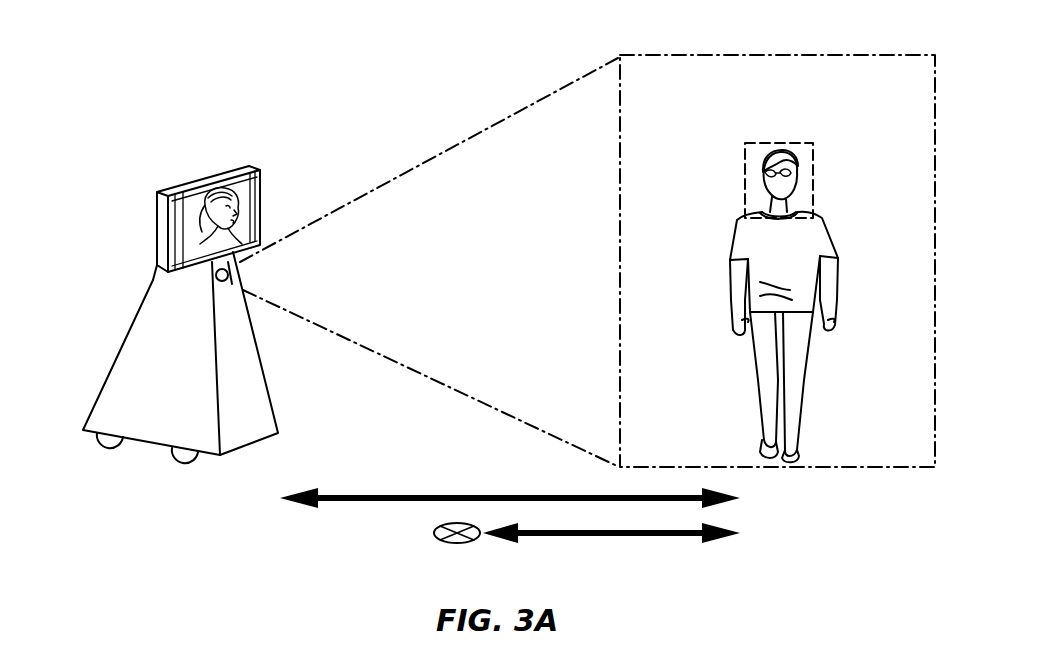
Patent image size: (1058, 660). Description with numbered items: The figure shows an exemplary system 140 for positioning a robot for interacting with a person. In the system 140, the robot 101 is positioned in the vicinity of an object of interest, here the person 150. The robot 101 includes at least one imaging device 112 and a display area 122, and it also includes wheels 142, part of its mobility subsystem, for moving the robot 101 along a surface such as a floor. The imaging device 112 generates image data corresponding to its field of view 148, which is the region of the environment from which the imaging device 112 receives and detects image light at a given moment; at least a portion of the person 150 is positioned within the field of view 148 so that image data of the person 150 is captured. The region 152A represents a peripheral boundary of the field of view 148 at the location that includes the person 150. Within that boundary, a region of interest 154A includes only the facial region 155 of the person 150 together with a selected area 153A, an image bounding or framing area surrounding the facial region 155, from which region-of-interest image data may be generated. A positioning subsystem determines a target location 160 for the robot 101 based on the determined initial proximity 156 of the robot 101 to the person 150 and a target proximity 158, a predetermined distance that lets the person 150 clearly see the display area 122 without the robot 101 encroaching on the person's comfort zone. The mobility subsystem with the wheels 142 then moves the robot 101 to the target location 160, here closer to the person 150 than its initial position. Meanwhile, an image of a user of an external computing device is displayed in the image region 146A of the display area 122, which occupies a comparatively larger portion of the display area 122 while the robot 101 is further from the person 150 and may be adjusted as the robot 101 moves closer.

The system 140 is at (133, 103).
The robot 101 is at (140, 307).
The wheels 142 is at (180, 462).
The display area 122 is at (267, 177).
The image region 146A is at (238, 185).
The imaging device 112 is at (243, 277).
The field of view 148 is at (477, 132).
The region 152A is at (780, 55).
The region of interest 154A is at (780, 143).
The selected area 153A is at (810, 160).
The facial region 155 is at (763, 173).
The person 150 is at (820, 245).
The initial proximity 156 is at (403, 492).
The target proximity 158 is at (623, 538).
The target location 160 is at (437, 528).